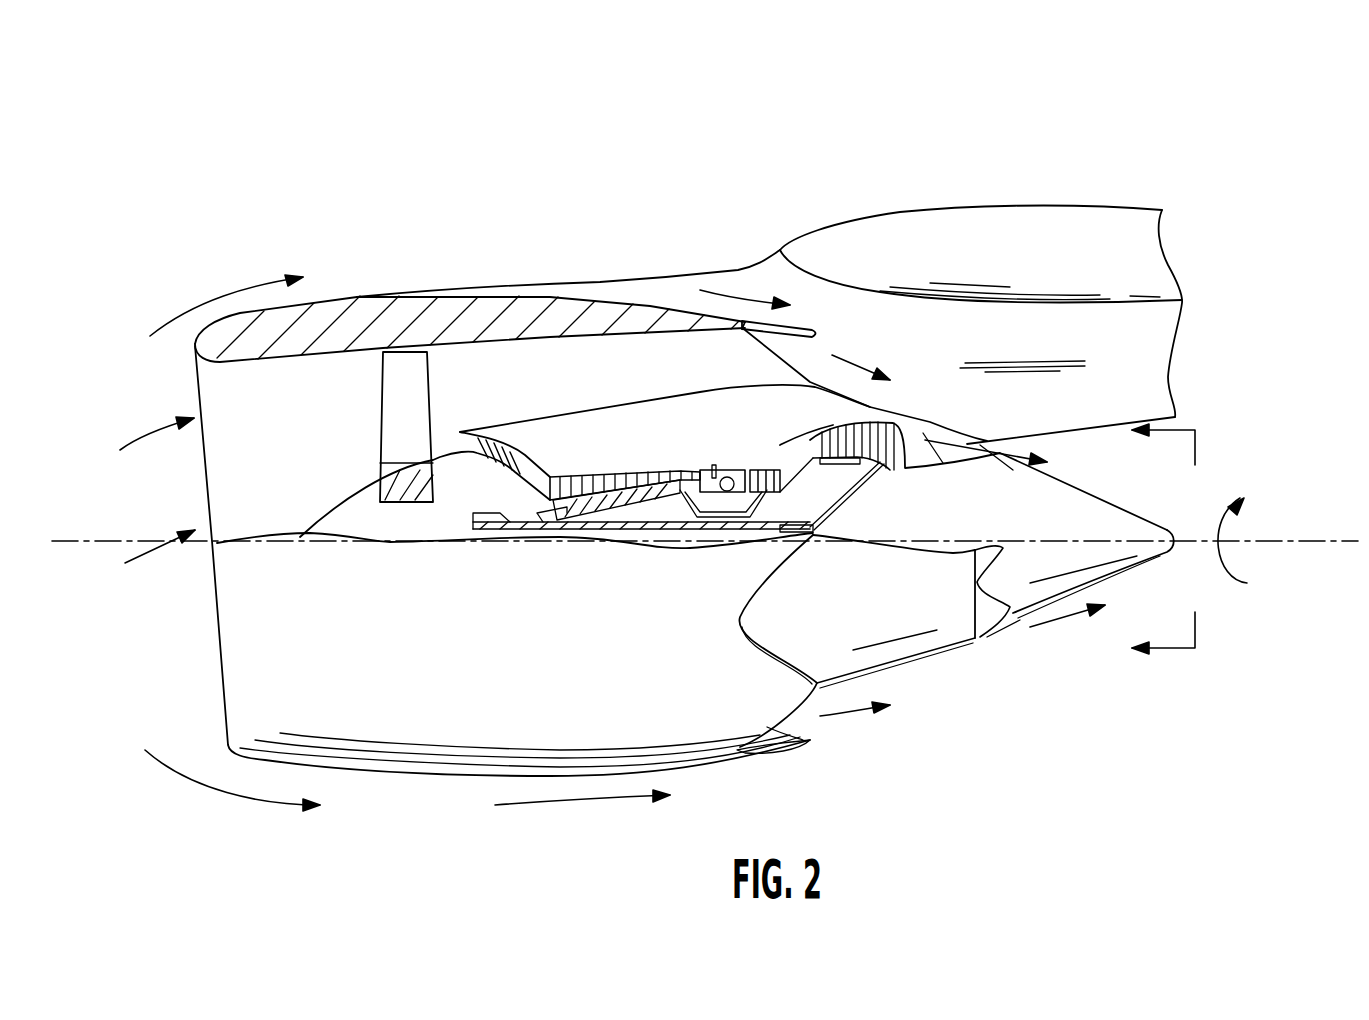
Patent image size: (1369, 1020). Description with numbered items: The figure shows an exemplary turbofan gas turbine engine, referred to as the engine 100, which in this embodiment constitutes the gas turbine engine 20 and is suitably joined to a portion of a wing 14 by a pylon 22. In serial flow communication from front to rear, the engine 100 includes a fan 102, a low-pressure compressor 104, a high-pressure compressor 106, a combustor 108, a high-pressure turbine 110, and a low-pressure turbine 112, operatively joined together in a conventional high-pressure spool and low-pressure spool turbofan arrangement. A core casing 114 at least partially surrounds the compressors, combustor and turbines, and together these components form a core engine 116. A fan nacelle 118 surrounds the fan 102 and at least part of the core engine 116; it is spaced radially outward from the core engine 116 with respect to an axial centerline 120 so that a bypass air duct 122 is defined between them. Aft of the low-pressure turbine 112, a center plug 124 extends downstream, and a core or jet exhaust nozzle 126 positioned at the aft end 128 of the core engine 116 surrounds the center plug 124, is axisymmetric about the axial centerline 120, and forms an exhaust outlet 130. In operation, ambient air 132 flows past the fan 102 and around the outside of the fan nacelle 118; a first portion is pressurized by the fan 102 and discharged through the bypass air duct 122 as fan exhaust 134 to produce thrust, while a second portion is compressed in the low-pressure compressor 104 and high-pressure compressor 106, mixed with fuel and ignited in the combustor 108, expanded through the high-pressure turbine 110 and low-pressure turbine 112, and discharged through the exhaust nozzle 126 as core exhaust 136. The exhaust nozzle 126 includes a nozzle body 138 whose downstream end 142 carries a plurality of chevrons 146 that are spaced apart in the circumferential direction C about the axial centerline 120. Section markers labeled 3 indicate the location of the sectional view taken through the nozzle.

The wing 14 is at (1033, 188).
The gas turbine engine 20 is at (590, 148).
The pylon 22 is at (858, 225).
The turbofan gas turbine engine 100 is at (183, 238).
The fan 102 is at (380, 418).
The low-pressure compressor 104 is at (503, 427).
The high-pressure compressor 106 is at (625, 475).
The combustor 108 is at (728, 475).
The high-pressure turbine 110 is at (760, 470).
The low-pressure turbine 112 is at (882, 420).
The core casing 114 is at (690, 410).
The core engine 116 is at (630, 410).
The fan nacelle 118 is at (483, 305).
The axial centerline 120 is at (1303, 540).
The bypass air duct 122 is at (549, 395).
The center plug 124 is at (1095, 515).
The exhaust nozzle 126 is at (913, 663).
The aft end 128 is at (1073, 473).
The exhaust outlet 130 is at (965, 440).
The ambient air 132 is at (233, 288).
The fan exhaust 134 is at (862, 368).
The core exhaust 136 is at (1020, 450).
The nozzle body 138 is at (878, 583).
The downstream end 142 is at (976, 652).
The chevrons 146 is at (987, 607).
The section line 3- 3 is at (1195, 447).
The circumferential direction C is at (1220, 560).